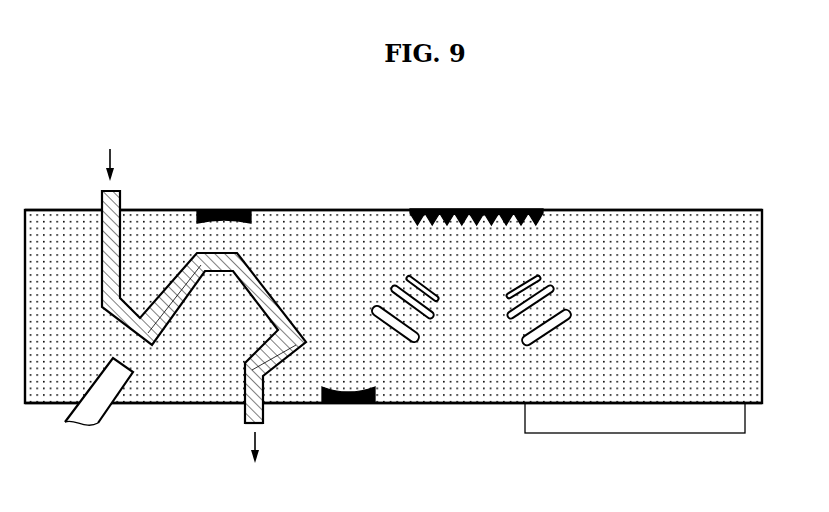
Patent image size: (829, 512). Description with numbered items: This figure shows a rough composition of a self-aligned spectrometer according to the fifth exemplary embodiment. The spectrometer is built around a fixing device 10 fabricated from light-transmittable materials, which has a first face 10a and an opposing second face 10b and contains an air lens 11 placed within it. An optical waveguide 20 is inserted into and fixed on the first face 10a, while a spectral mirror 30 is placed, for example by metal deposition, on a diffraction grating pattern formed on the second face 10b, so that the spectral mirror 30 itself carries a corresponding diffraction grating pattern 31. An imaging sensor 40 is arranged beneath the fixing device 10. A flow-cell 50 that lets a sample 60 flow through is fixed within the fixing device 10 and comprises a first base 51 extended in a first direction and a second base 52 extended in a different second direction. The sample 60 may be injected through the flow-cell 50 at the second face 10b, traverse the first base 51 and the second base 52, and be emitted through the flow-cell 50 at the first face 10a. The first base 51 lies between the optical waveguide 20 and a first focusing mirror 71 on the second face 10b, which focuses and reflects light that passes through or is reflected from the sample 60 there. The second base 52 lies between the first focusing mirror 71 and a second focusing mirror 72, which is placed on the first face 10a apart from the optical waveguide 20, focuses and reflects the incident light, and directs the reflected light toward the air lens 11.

The fixing device 10 is at (763, 303).
The first face 10a is at (753, 405).
The second face 10b is at (737, 210).
The air lens 11 is at (417, 343).
The optical waveguide 20 is at (97, 424).
The spectral mirror 30 is at (414, 210).
The diffraction grating pattern 31 is at (538, 222).
The imaging sensor 40 is at (622, 433).
The flow-cell 50 is at (101, 193).
The first base 51 is at (157, 299).
The second base 52 is at (250, 305).
The sample 60 is at (264, 415).
The first focusing mirror 71 is at (222, 210).
The second focusing mirror 72 is at (352, 405).